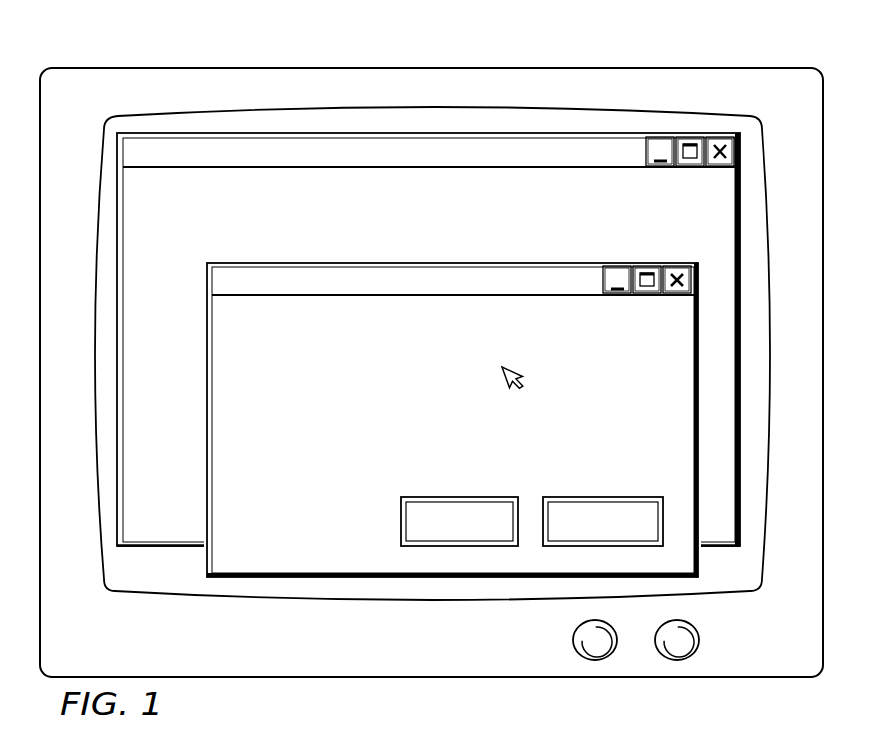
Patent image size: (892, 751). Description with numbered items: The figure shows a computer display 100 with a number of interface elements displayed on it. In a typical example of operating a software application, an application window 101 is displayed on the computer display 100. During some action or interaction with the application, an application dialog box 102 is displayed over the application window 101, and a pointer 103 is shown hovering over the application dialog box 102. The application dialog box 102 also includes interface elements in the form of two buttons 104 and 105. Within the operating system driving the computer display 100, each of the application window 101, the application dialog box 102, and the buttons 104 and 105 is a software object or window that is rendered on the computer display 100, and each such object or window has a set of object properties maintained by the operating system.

The computer display 100 is at (556, 65).
The application window 101 is at (206, 230).
The application dialog box 102 is at (290, 358).
The pointer 103 is at (511, 365).
The button 104 is at (460, 497).
The button 105 is at (608, 497).